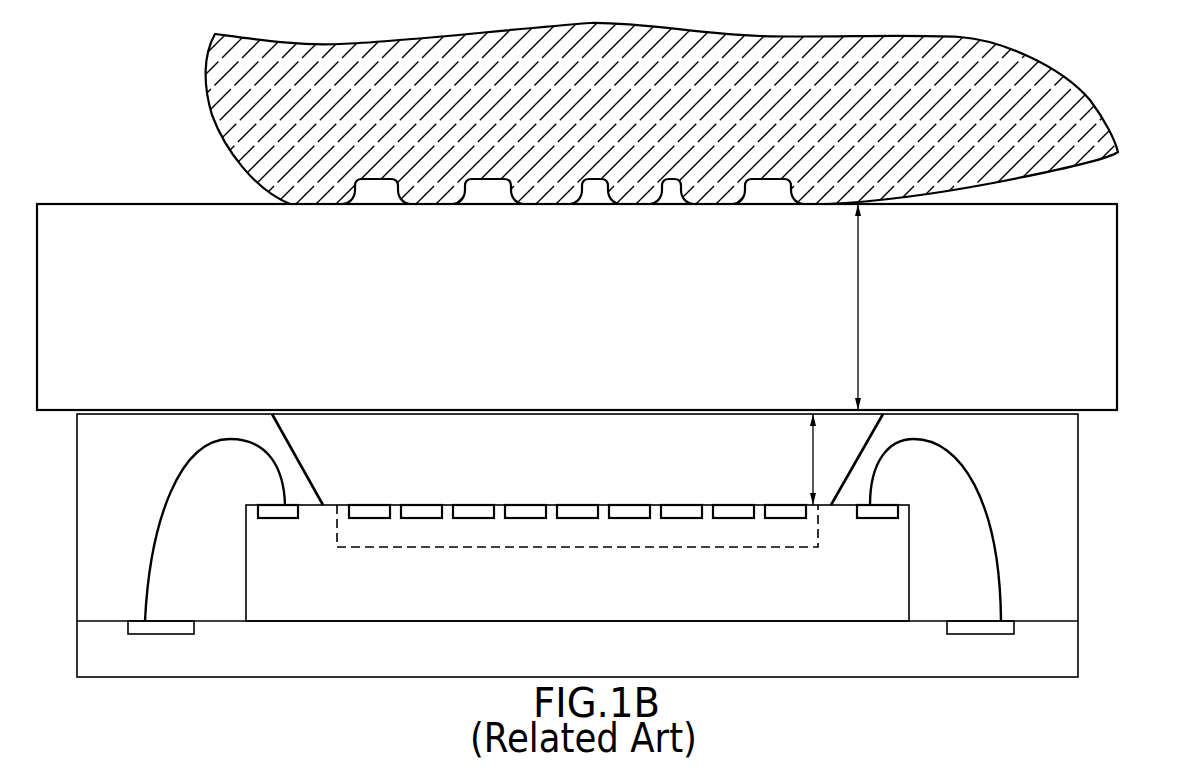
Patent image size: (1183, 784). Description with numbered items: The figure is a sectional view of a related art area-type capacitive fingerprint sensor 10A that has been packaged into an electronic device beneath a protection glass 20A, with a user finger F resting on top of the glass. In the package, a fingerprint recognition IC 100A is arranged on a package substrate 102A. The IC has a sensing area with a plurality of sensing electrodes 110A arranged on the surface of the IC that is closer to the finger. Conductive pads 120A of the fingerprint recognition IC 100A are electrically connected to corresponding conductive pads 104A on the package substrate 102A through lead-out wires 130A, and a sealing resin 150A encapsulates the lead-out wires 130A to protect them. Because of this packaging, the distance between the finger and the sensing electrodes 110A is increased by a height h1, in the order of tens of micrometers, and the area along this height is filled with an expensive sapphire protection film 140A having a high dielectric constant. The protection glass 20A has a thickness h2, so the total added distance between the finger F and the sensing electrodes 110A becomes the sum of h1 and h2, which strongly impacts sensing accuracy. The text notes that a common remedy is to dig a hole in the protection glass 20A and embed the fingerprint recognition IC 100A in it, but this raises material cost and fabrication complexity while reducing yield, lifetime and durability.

The finger F is at (238, 116).
The protection glass 20A is at (575, 323).
The thickness of protection glass h2 is at (844, 307).
The height h1 is at (797, 459).
The fingerprint sensor package 10A is at (611, 542).
The sealing resin 150A is at (1055, 491).
The package substrate 102A is at (632, 660).
The fingerprint recognition IC 100A is at (632, 595).
The sensing electrodes 110A is at (370, 510).
The conductive pads 120A is at (267, 503).
The lead-out wires 130A is at (167, 499).
The sapphire protection film 140A is at (645, 445).
The conductive pads 104A is at (175, 629).